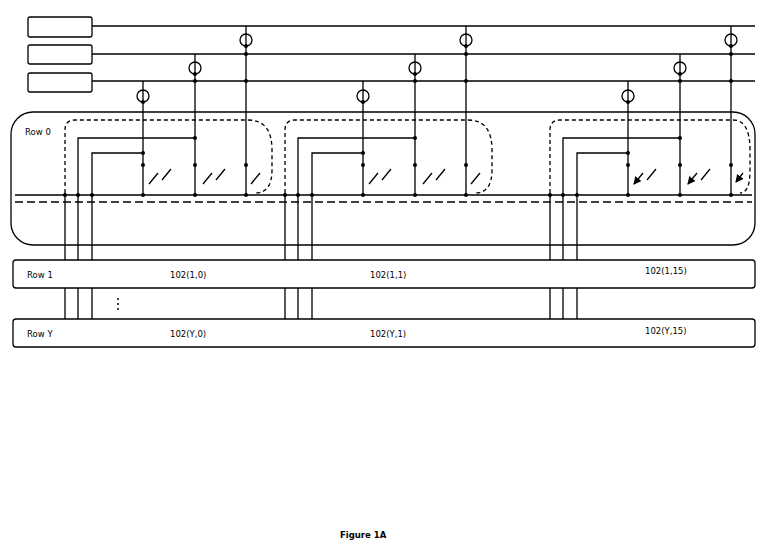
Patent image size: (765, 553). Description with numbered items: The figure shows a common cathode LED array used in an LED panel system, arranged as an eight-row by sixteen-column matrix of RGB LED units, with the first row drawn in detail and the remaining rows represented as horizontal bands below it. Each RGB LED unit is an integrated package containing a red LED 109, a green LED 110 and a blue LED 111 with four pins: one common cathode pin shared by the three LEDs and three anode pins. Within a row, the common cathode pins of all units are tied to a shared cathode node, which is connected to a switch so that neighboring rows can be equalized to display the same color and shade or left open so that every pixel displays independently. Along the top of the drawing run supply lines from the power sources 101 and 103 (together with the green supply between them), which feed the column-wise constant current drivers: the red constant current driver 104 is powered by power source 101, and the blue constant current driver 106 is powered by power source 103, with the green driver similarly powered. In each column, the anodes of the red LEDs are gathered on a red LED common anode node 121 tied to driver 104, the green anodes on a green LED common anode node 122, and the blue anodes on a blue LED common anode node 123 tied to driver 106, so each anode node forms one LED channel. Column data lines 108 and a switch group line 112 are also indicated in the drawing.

The power source 101 is at (391, 27).
The power source 103 is at (391, 82).
The constant current driver 104 is at (468, 110).
The constant current driver 106 is at (375, 173).
The column data line 108 is at (366, 138).
The red LED 109 is at (418, 124).
The green LED 110 is at (429, 169).
The blue LED 111 is at (474, 165).
The switch group line 112 is at (486, 203).
The red LED common anode node 121 is at (62, 198).
The green LED common anode node 122 is at (77, 215).
The blue LED common anode node 123 is at (95, 208).